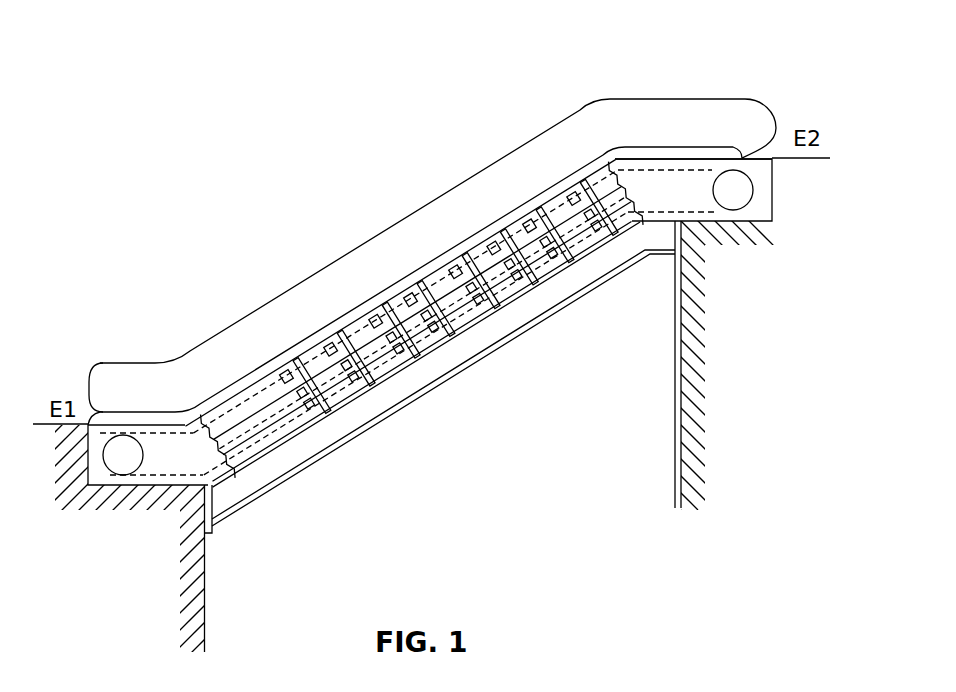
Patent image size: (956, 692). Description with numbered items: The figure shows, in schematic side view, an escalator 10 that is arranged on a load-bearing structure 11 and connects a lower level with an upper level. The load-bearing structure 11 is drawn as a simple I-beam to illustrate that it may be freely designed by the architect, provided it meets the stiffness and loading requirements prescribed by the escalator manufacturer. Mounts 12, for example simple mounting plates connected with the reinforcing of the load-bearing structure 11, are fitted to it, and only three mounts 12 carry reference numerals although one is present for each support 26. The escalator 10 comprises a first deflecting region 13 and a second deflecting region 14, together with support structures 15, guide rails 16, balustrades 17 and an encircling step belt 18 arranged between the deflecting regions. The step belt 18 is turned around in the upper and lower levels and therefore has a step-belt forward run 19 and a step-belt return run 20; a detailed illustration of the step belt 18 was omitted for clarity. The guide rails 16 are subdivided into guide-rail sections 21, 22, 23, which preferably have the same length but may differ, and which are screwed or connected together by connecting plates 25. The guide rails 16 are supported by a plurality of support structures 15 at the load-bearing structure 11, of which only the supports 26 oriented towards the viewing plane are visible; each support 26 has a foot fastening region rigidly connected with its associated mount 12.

The escalator 10 is at (376, 194).
The load-bearing structure 11 is at (428, 370).
The mount 12 is at (650, 215).
The first deflecting region 13 is at (160, 457).
The second deflecting region 14 is at (758, 222).
The support structure 15 is at (518, 236).
The guide rail 16 is at (383, 366).
The balustrade 17 is at (260, 322).
The step belt 18 is at (670, 170).
The step-belt forward run 19 is at (698, 156).
The step-belt return run 20 is at (692, 213).
The guide-rail section 21 is at (248, 388).
The guide-rail section 22 is at (350, 333).
The guide-rail section 23 is at (497, 258).
The connecting plate 25 is at (310, 353).
The support 26 is at (483, 321).